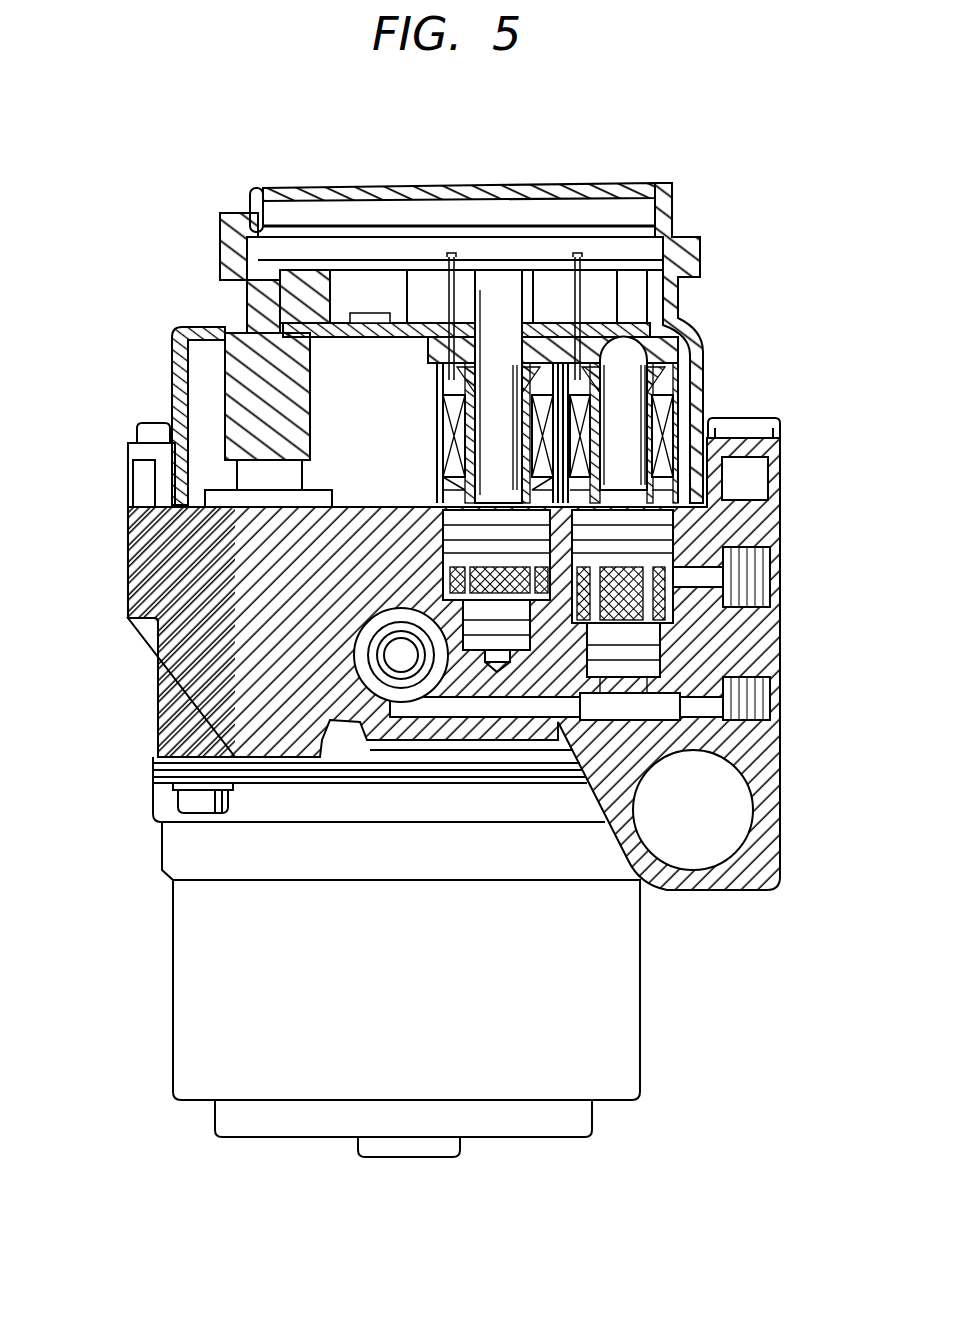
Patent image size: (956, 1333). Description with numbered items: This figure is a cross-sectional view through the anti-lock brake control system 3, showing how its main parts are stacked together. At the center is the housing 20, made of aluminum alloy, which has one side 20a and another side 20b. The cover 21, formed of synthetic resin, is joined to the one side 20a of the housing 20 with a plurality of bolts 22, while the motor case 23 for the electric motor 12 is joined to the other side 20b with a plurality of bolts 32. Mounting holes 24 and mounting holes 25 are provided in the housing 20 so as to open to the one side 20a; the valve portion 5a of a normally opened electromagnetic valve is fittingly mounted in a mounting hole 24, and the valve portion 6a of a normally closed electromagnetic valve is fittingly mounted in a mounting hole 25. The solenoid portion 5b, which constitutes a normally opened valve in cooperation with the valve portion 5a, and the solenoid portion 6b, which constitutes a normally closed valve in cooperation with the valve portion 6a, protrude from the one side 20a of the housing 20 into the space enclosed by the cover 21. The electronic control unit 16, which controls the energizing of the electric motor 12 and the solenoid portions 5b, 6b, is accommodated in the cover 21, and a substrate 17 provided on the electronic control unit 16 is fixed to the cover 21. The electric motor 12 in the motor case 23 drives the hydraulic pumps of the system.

The anti-lock brake control system 3 is at (699, 298).
The electronic control unit 16 is at (483, 256).
The substrate 17 is at (544, 262).
The cover 21 is at (173, 328).
The bolts 22 is at (160, 420).
The housing 20 is at (128, 548).
The one side of the housing 20a is at (313, 504).
The another side of the housing 20b is at (258, 762).
The solenoid portion 5b is at (672, 398).
The solenoid portion 6b is at (437, 423).
The valve portion 6a is at (445, 604).
The valve portion 5a is at (655, 633).
The mounting hole 25 is at (437, 725).
The mounting hole 24 is at (556, 730).
The bolts 32 is at (205, 812).
The motor case 23 is at (182, 966).
The electric motor 12 is at (414, 988).